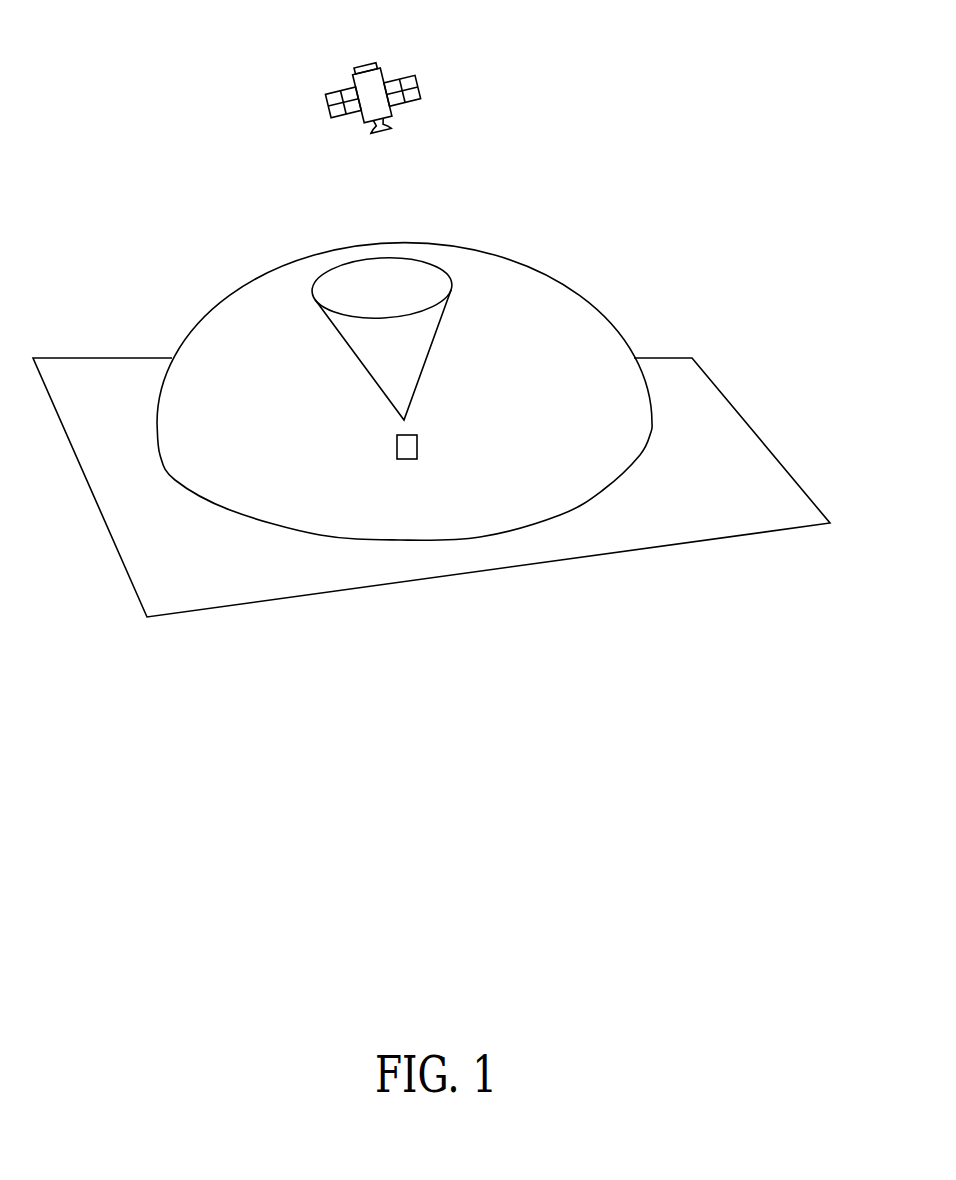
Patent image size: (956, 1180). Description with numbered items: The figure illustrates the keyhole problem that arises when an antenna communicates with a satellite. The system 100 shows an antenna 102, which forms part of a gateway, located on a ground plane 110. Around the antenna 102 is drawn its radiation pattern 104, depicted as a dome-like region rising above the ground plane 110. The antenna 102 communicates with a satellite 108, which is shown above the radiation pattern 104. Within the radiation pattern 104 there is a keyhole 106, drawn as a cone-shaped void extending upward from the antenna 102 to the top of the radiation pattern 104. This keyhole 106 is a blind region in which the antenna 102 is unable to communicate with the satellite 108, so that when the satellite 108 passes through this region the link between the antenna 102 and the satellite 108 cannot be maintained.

The system 100 is at (97, 116).
The antenna 102 is at (417, 445).
The radiation pattern 104 is at (593, 307).
The keyhole 106 is at (447, 270).
The satellite 108 is at (403, 77).
The ground plane 110 is at (790, 472).